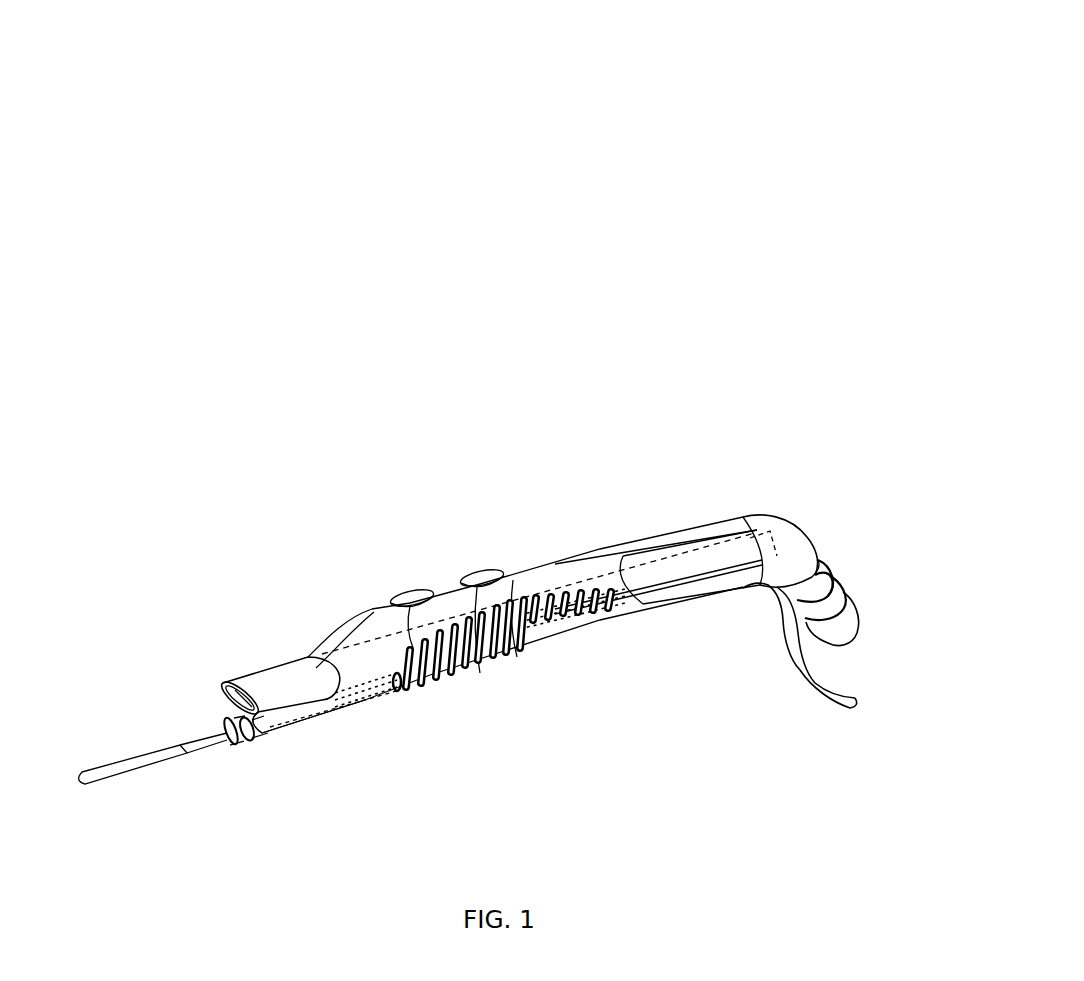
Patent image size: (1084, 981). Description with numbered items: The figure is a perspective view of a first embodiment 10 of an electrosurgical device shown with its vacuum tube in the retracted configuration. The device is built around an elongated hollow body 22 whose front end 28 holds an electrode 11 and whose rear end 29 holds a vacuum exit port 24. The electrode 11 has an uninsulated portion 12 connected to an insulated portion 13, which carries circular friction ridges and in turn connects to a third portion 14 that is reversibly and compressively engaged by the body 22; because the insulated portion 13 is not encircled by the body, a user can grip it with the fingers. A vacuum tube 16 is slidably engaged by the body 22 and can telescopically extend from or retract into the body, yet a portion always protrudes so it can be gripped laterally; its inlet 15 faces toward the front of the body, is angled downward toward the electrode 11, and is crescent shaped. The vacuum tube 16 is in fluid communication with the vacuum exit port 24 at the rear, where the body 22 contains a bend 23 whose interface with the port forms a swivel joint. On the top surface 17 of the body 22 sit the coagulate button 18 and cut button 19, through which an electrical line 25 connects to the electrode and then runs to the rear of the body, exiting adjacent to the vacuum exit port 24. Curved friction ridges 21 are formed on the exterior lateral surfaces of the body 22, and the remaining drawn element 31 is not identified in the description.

The embodiment 10 is at (708, 120).
The electrode 11 is at (122, 740).
The uninsulated portion 12 is at (143, 770).
The insulated portion 13 is at (238, 745).
The third portion 14 is at (305, 720).
The inlet 15 is at (257, 713).
The vacuum tube 16 is at (278, 673).
The top surface 17 is at (437, 590).
The coagulate button 18 is at (410, 598).
The cut button 19 is at (480, 575).
The curved friction ridges 21 is at (367, 697).
The hollow body 22 is at (672, 550).
The bend 23 is at (773, 515).
The vacuum exit port 24 is at (798, 557).
The electrical line 25 is at (826, 713).
The front end 28 is at (250, 478).
The rear end 29 is at (806, 398).
The cable connector 31 is at (828, 552).